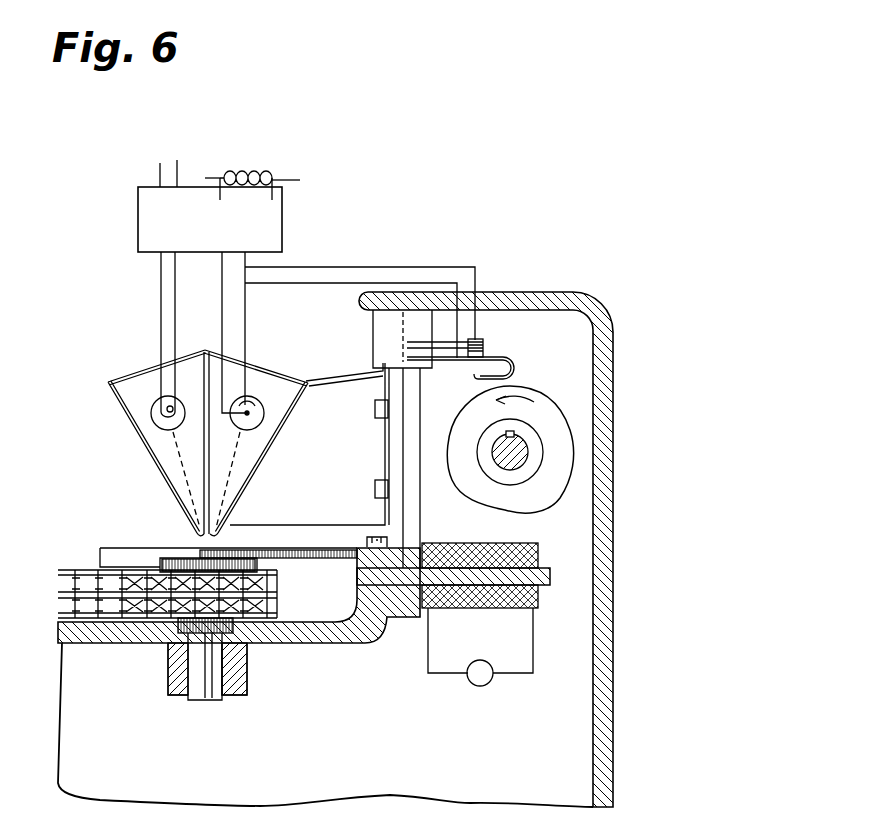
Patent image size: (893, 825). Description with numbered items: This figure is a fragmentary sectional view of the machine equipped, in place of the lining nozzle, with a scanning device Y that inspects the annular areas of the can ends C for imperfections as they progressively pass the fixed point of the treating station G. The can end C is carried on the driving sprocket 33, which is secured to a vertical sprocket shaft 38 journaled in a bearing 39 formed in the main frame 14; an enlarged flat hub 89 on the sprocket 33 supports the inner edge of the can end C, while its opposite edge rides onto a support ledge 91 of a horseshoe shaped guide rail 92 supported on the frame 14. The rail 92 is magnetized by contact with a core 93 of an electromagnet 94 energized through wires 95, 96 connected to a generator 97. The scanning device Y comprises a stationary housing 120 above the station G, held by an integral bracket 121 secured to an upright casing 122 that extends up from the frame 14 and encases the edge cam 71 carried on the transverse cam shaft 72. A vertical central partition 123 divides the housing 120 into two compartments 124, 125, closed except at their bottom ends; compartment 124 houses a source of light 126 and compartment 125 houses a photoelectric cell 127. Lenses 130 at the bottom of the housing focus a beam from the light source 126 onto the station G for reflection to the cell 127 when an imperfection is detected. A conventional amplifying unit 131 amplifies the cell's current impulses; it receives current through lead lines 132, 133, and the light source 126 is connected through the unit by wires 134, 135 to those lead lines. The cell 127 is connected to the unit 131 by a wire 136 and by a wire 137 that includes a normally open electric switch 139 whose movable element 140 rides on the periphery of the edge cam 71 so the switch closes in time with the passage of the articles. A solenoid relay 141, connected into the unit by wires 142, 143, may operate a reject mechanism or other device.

The main frame 14 is at (335, 640).
The driving sprocket 33 is at (277, 603).
The sprocket shaft 38 is at (200, 660).
The bearing 39 is at (178, 682).
The edge cam 71 is at (553, 422).
The cam shaft 72 is at (514, 456).
The enlarged flat hub 89 is at (180, 562).
The support ledge 91 is at (360, 576).
The horseshoe shaped guide rail 92 is at (390, 546).
The core 93 is at (538, 563).
The electromagnet 94 is at (538, 600).
The wire 95 is at (428, 644).
The wire 96 is at (533, 660).
The generator 97 is at (490, 684).
The stationary housing 120 is at (167, 487).
The integral bracket 121 is at (317, 402).
The upright casing 122 is at (408, 430).
The partition 123 is at (209, 468).
The compartment 124 is at (142, 418).
The compartment 125 is at (278, 436).
The source of light 126 is at (152, 412).
The photoelectric cell 127 is at (285, 412).
The lenses 130 is at (165, 536).
The amplifying unit 131 is at (282, 226).
The lead line 132 is at (160, 167).
The lead line 133 is at (178, 168).
The wire 134 is at (160, 330).
The wire 135 is at (177, 295).
The wire 136 is at (222, 330).
The wire 137 is at (347, 284).
The electric switch 139 is at (483, 345).
The movable element 140 is at (508, 374).
The solenoid relay 141 is at (272, 166).
The wire 142 is at (199, 177).
The wire 143 is at (300, 180).
The scanning device Y is at (135, 467).
The treating station G is at (224, 540).
The can end C is at (276, 548).